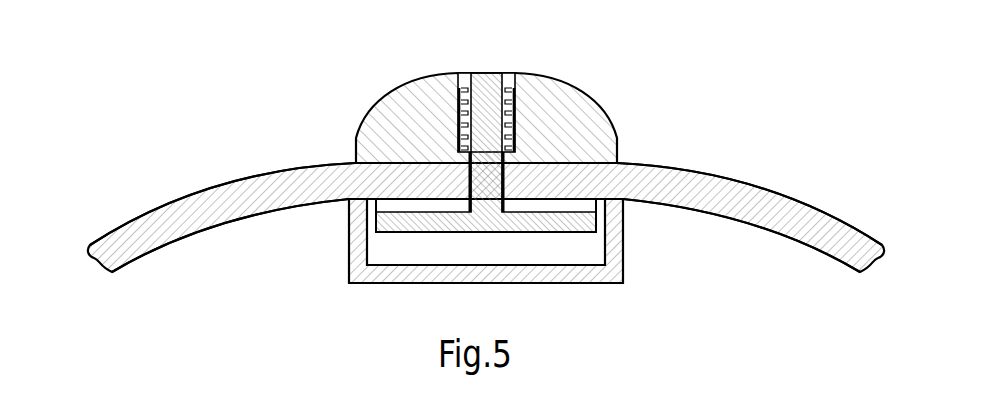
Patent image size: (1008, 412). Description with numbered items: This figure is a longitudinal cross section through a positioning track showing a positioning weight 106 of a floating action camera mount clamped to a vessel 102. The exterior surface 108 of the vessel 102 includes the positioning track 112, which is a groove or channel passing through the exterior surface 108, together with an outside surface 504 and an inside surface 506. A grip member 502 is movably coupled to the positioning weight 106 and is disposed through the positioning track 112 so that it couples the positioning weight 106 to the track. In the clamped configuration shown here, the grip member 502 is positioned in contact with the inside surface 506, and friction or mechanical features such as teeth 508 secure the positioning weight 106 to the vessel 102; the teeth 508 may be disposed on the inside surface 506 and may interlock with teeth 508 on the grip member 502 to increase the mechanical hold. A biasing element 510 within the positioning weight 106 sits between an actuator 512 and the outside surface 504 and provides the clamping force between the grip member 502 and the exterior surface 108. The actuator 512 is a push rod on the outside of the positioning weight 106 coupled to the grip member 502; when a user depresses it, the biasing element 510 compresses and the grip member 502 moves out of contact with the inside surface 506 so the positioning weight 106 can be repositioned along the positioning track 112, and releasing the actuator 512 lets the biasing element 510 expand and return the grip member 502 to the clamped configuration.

The vessel 102 is at (150, 203).
The positioning weight 106 is at (400, 100).
The exterior surface 108 is at (130, 237).
The positioning track 112 is at (497, 183).
The grip member 502 is at (408, 223).
The outside surface 504 is at (223, 182).
The inside surface 506 is at (163, 233).
The teeth 508 is at (562, 207).
The biasing element 510 is at (513, 104).
The actuator 512 is at (483, 72).